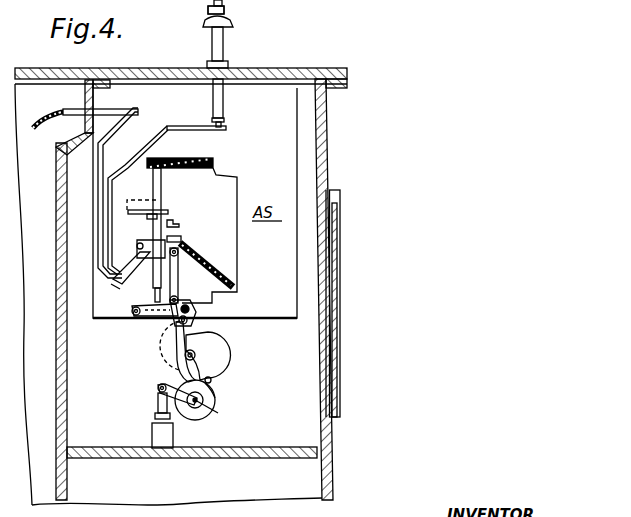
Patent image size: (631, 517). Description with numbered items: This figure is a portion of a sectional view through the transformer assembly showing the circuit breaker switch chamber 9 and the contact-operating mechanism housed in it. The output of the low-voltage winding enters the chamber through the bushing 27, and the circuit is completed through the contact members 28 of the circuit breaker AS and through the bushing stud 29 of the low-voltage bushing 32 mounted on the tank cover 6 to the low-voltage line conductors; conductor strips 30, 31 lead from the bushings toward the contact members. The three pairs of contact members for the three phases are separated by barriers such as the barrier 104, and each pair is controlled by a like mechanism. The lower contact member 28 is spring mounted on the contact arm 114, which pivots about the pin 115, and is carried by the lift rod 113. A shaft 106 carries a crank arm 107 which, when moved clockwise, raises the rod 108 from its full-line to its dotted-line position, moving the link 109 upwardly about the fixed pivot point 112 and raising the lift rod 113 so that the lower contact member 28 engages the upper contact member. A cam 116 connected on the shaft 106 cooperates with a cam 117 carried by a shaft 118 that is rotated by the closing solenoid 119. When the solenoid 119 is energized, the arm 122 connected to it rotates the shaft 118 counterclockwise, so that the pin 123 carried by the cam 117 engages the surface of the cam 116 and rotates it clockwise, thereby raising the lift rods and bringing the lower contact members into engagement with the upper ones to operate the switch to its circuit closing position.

The cover plate 6 is at (313, 67).
The circuit breaker switch chamber 9 is at (307, 135).
The barrier 104 is at (277, 170).
The bushing 27 is at (77, 110).
The bushing stud 29 is at (225, 10).
The low-voltage bushing 32 is at (225, 40).
The conductor strip 30 is at (115, 147).
The conductor strip 31 is at (147, 149).
The contact member 28 is at (174, 232).
The pin 115 is at (147, 240).
The contact arm 114 is at (147, 262).
The lift rod 113 is at (176, 277).
The fixed pivot point 112 is at (140, 306).
The link 109 is at (158, 323).
The rod 108 is at (180, 345).
The cam 116 is at (212, 340).
The shaft 106 is at (200, 353).
The crank arm 107 is at (203, 368).
The pin 123 is at (205, 383).
The cam 117 is at (213, 403).
The shaft 118 is at (203, 402).
The arm 122 is at (157, 398).
The closing solenoid 119 is at (175, 433).